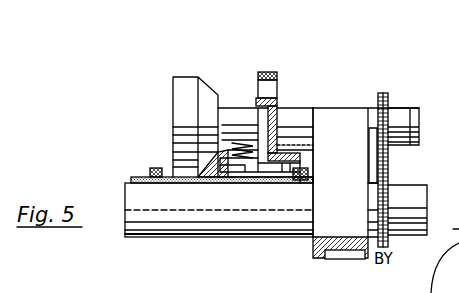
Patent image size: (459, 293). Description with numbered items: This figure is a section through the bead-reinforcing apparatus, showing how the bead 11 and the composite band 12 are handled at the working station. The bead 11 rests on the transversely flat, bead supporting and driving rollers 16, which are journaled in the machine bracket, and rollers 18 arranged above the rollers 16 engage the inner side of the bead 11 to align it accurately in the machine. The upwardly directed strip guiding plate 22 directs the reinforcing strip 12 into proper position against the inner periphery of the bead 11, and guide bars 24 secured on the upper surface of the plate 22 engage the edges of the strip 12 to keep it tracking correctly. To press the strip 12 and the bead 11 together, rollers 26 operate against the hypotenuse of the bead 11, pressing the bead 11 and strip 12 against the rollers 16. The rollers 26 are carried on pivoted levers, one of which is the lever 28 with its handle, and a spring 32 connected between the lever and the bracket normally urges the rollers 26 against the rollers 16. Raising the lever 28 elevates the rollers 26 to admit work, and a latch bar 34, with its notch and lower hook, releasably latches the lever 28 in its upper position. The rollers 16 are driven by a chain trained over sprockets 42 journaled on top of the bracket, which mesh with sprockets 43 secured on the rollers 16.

The bead 11 is at (212, 178).
The composite band 12 is at (170, 176).
The bead supporting and driving rollers 16 is at (160, 234).
The rollers 18 is at (222, 160).
The strip guiding plate 22 is at (226, 173).
The guide bars 24 is at (150, 171).
The rollers 26 is at (179, 86).
The lever 28 is at (263, 72).
The spring 32 is at (247, 143).
The latch bar 34 is at (278, 108).
The sprockets 42 is at (383, 93).
The sprockets 43 is at (390, 174).